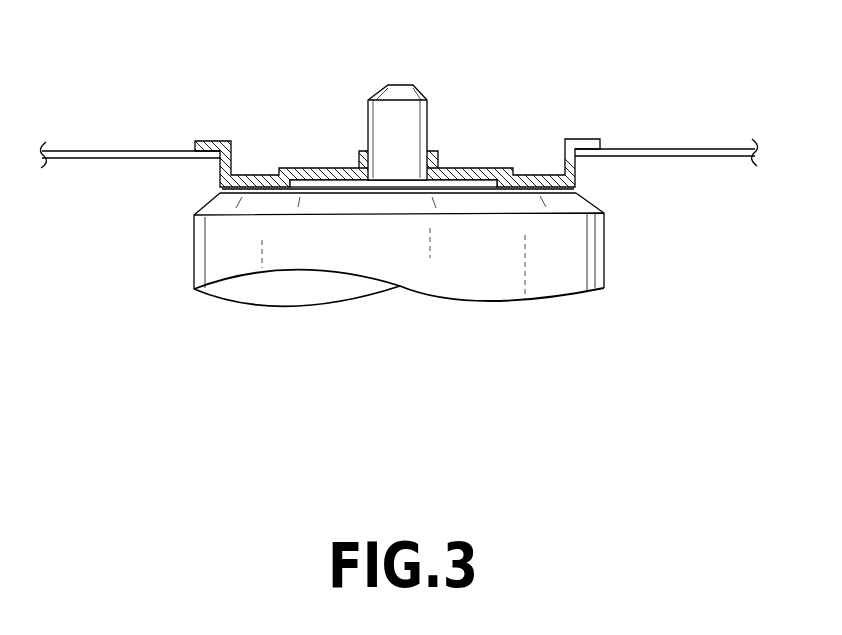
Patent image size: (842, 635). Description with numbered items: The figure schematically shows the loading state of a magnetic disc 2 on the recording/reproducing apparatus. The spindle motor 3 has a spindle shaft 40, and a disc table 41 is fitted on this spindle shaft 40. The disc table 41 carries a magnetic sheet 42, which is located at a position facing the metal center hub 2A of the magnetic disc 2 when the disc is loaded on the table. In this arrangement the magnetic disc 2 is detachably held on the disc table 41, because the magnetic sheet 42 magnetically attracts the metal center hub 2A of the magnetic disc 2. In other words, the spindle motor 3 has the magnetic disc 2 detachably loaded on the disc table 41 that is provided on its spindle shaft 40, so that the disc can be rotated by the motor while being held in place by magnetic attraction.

The magnetic disc 2 is at (685, 150).
The metal center hub 2A is at (477, 172).
The spindle motor 3 is at (398, 268).
The spindle shaft 40 is at (403, 110).
The disc table 41 is at (357, 182).
The magnetic sheet 42 is at (537, 190).